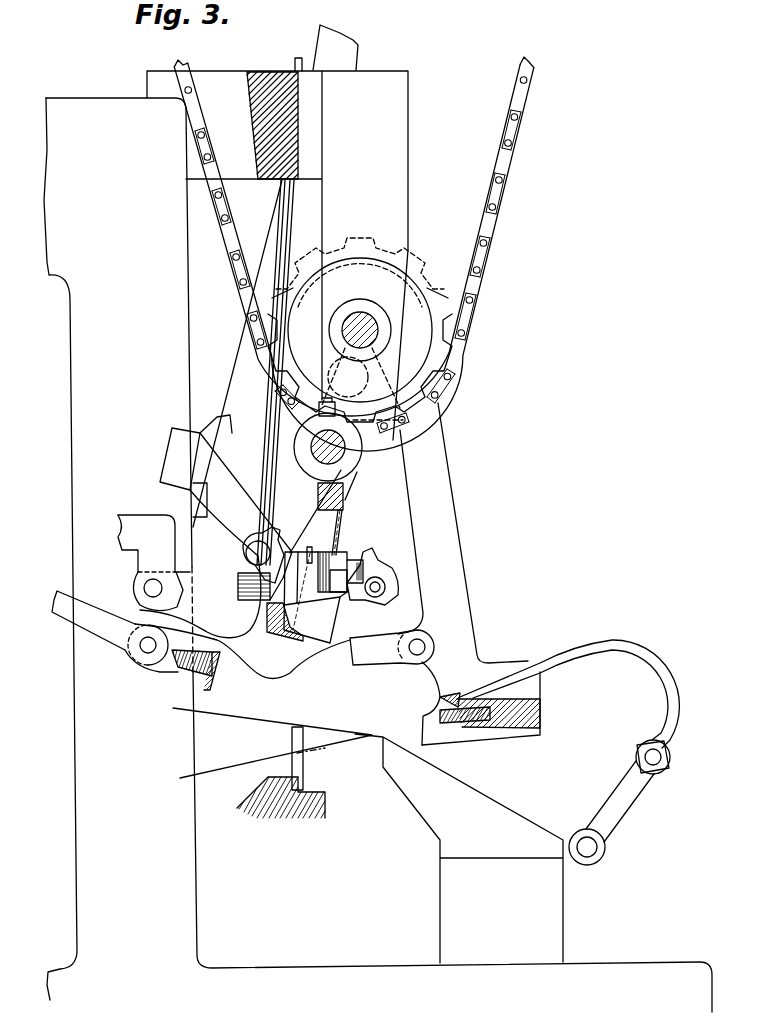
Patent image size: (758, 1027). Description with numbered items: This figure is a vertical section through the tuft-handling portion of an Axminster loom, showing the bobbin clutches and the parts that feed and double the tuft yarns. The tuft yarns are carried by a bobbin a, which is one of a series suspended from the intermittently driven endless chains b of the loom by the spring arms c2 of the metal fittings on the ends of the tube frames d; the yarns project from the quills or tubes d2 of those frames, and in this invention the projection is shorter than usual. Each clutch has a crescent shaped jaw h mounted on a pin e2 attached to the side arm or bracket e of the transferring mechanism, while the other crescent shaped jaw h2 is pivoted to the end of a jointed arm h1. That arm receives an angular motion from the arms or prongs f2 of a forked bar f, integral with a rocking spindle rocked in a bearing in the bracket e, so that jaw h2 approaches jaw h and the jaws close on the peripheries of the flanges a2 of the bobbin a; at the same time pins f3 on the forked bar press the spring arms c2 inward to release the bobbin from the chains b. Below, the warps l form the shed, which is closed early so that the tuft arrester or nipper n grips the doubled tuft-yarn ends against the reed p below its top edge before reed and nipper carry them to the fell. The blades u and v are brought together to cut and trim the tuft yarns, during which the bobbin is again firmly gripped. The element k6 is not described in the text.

The endless chains b is at (219, 243).
The spring arms c2 is at (327, 398).
The connecting rod k6 is at (268, 434).
The flanges a2 is at (362, 460).
The bobbin a is at (318, 458).
The side arm or bracket e is at (226, 514).
The tube frames d is at (344, 497).
The crescent shaped jaw h is at (274, 530).
The quills or tubes d2 is at (337, 528).
The arms or prongs f2 is at (350, 556).
The pins f3 is at (308, 562).
The crescent shaped jaw h2 is at (375, 568).
The pin e2 is at (245, 553).
The forked bar f is at (333, 600).
The jointed arm h1 is at (392, 636).
The blade u is at (220, 661).
The warps l is at (250, 722).
The reed p is at (304, 758).
The tuft arrester or nipper n is at (432, 706).
The blade v is at (442, 733).